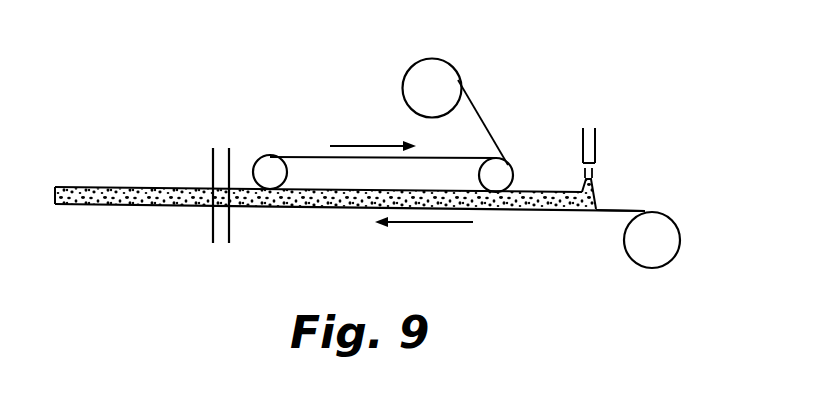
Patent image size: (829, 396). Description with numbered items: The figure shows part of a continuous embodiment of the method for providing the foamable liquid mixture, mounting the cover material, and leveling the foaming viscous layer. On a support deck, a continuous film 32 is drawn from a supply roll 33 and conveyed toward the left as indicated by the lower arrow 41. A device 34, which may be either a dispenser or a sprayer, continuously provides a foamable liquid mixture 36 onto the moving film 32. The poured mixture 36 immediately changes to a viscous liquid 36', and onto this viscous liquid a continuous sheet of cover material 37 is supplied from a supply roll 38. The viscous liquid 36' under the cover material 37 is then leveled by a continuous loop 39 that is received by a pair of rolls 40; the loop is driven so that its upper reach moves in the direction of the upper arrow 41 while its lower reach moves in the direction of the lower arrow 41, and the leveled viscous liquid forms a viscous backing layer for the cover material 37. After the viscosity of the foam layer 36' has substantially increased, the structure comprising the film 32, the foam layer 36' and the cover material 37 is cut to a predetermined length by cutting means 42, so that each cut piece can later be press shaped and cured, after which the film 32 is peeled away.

The continuous film 32 is at (652, 212).
The supply roll 33 is at (627, 258).
The device 34 is at (595, 145).
The foamable liquid mixture 36 is at (559, 156).
The viscous liquid 36' is at (347, 232).
The cover material 37 is at (478, 107).
The supply roll 38 is at (463, 90).
The continuous loop 39 is at (307, 190).
The rolls 40 is at (287, 158).
The arrows 41 is at (339, 145).
The cutting means 42 is at (207, 213).